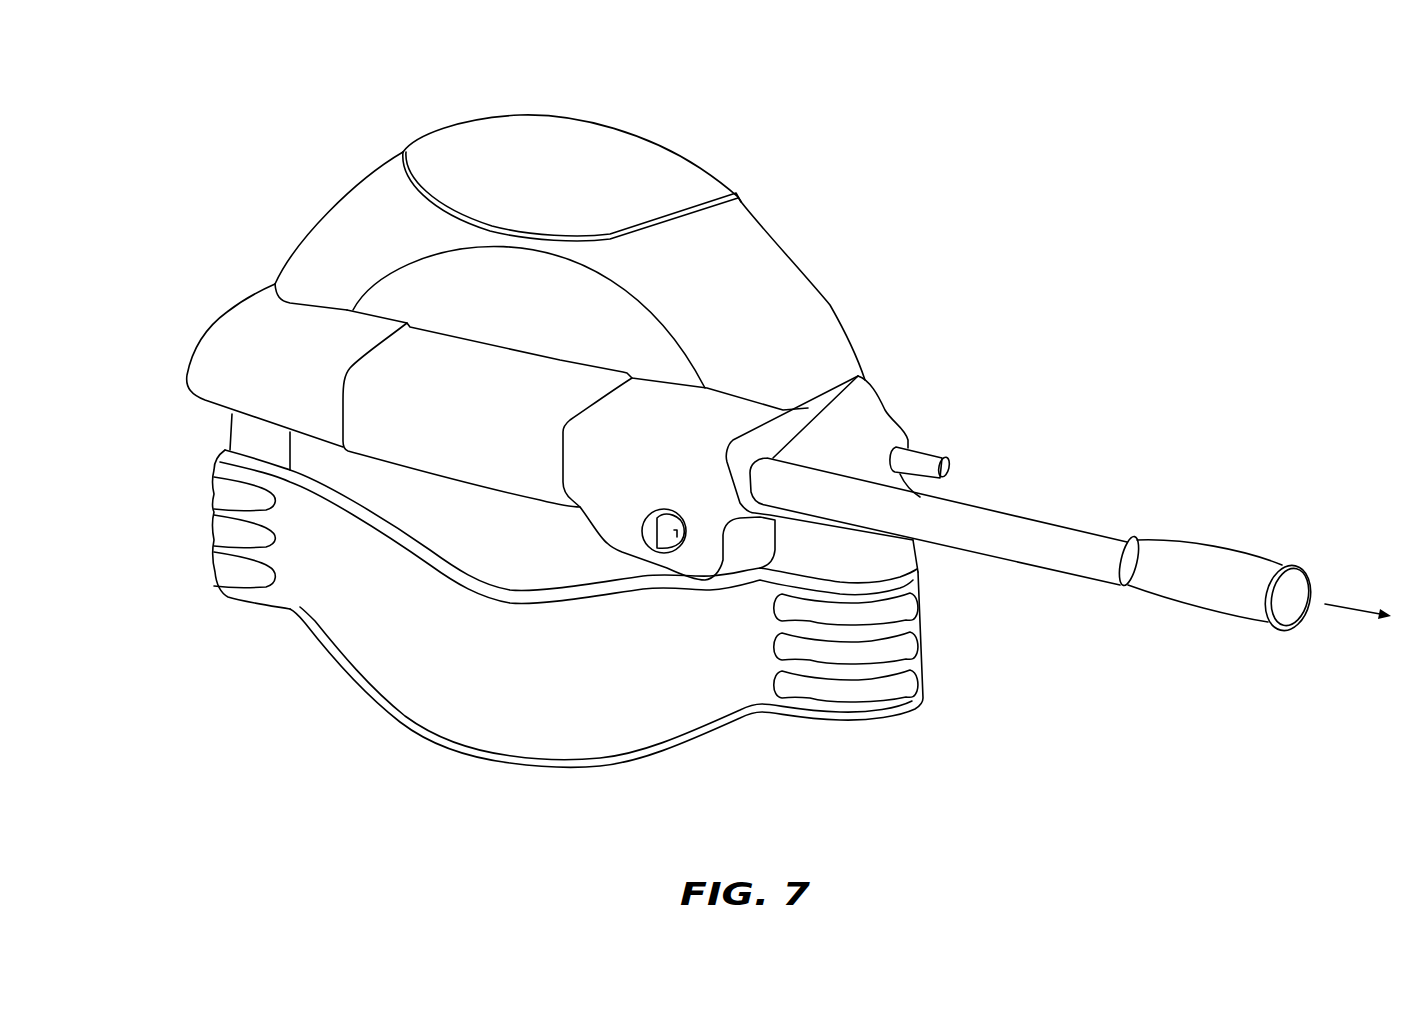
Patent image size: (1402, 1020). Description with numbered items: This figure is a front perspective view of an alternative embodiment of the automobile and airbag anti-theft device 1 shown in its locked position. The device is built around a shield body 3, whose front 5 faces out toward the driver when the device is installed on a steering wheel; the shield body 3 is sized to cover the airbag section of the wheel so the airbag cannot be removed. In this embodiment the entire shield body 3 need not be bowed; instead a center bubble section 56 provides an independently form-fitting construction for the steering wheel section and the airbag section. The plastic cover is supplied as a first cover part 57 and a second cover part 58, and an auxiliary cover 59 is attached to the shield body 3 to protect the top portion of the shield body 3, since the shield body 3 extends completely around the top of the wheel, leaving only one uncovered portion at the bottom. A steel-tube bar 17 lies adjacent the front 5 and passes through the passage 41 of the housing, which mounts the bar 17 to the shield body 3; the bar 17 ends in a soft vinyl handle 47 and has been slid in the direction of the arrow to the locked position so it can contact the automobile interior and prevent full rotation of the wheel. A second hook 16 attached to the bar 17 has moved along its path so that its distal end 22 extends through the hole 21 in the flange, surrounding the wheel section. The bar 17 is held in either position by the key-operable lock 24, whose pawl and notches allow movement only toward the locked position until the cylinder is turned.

The automobile and airbag anti-theft device 1 is at (232, 210).
The shield body 3 is at (830, 307).
The front 5 is at (528, 309).
The second hook 16 is at (931, 460).
The bar 17 is at (1056, 538).
The hole 21 is at (904, 442).
The distal end 22 is at (953, 470).
The key-operable lock 24 is at (665, 542).
The passage 41 is at (853, 370).
The handle 47 is at (1212, 552).
The center bubble section 56 is at (443, 538).
The first cover part 57 is at (295, 552).
The second cover part 58 is at (227, 312).
The auxiliary cover 59 is at (490, 148).